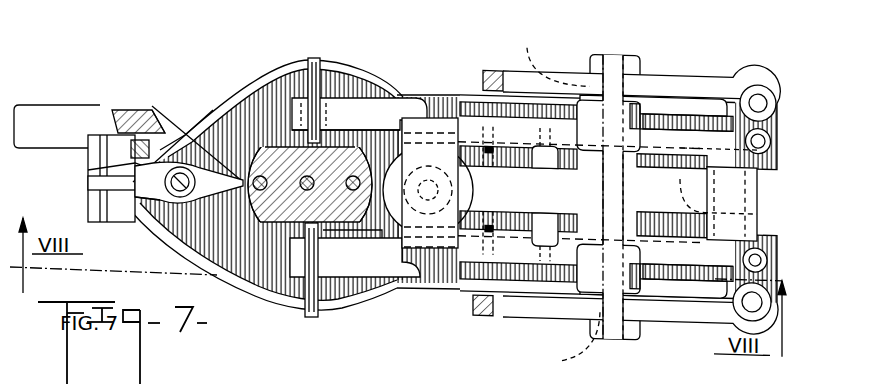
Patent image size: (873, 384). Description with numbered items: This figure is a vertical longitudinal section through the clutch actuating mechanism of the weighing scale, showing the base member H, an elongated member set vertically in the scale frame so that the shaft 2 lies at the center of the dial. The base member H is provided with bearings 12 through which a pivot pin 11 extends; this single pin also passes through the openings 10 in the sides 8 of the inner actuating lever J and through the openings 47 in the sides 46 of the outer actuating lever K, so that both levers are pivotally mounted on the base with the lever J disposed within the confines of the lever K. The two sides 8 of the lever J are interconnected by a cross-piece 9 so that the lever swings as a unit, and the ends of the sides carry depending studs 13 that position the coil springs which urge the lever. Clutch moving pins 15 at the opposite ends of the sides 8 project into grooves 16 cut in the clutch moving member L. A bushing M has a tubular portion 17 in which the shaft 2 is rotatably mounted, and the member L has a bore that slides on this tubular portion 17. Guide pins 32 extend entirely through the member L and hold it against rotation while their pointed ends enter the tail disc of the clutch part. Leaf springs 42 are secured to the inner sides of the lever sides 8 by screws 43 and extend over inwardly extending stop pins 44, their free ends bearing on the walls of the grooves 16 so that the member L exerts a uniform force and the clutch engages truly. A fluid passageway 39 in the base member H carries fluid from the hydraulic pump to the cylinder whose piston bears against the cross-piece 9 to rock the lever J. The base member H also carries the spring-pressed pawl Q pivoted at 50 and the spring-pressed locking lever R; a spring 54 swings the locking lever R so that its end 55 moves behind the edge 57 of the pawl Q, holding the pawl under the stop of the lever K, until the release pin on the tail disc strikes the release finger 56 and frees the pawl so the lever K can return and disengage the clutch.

The shaft 2 is at (301, 167).
The sides of lever J 8 is at (706, 150).
The cross-piece 9 is at (447, 257).
The openings 10 is at (600, 141).
The pivot pin 11 is at (608, 52).
The bearings 12 is at (634, 100).
The depending studs 13 is at (760, 137).
The clutch moving pins 15 is at (318, 58).
The grooves 16 is at (277, 140).
The tubular portion 17 is at (340, 236).
The guide pins 32 is at (254, 187).
The fluid passageway 39 is at (757, 194).
The leaf springs 42 is at (390, 133).
The screws 43 is at (544, 232).
The stop pins 44 is at (493, 228).
The sides of lever K 46 is at (496, 69).
The openings 47 is at (556, 206).
The pivot 50 is at (100, 133).
The spring 54 is at (125, 147).
The end of locking lever 55 is at (118, 172).
The release finger 56 is at (213, 110).
The edge of pawl 57 is at (143, 150).
The base member H is at (550, 274).
The inner actuating lever J is at (665, 145).
The outer actuating lever K is at (479, 86).
The clutch moving member L is at (342, 164).
The bushing M is at (318, 169).
The spring-pressed pawl Q is at (86, 183).
The locking lever R is at (155, 186).